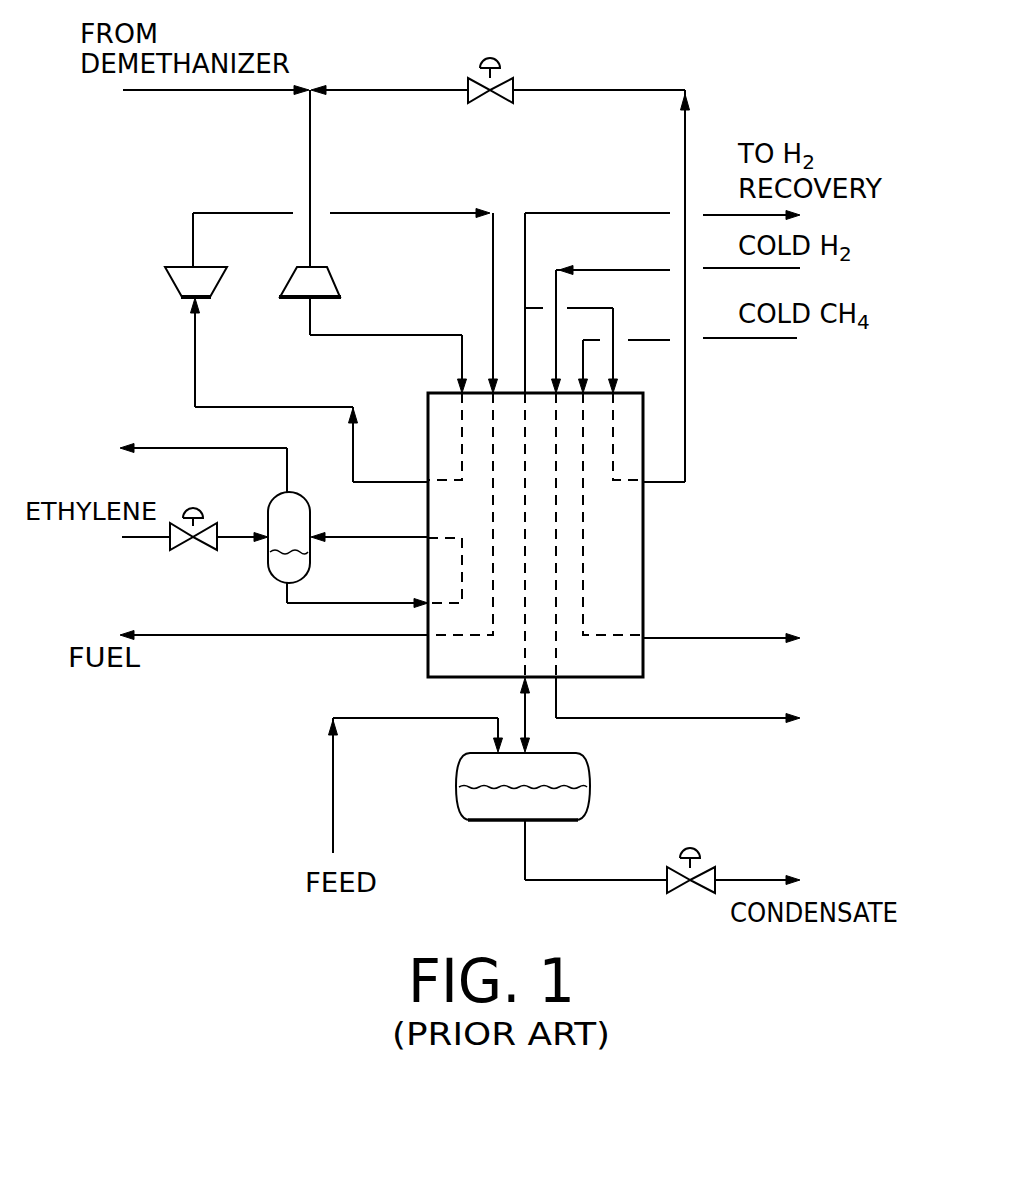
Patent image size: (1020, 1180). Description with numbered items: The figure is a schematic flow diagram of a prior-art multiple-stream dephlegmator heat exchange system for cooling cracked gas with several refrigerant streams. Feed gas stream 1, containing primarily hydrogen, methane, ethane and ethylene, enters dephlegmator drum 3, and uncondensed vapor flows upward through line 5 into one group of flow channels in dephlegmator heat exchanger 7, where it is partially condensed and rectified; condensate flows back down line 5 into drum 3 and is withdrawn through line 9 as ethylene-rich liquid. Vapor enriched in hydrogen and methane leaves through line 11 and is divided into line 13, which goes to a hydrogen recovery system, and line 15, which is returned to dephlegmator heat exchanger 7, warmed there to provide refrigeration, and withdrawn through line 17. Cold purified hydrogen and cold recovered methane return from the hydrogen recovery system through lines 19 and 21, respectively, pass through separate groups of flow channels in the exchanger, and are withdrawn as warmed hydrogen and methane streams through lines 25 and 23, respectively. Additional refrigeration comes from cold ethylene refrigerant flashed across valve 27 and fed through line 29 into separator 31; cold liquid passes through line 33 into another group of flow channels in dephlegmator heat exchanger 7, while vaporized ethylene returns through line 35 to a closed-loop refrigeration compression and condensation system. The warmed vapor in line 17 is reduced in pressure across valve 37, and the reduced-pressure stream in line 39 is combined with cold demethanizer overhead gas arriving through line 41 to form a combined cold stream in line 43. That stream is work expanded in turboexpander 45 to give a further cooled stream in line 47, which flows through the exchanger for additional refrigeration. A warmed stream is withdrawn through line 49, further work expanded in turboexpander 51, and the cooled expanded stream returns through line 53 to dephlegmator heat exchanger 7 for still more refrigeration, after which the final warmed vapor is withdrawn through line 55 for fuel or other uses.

The feed gas stream 1 is at (333, 767).
The dephlegmator drum 3 is at (589, 780).
The line 5 is at (520, 710).
The dephlegmator heat exchanger 7 is at (644, 582).
The line 9 is at (612, 878).
The line 11 is at (523, 330).
The line 13 is at (612, 212).
The line 15 is at (613, 322).
The line 17 is at (686, 418).
The line 19 is at (711, 268).
The line 21 is at (711, 337).
The line 23 is at (697, 637).
The line 25 is at (690, 717).
The valve 27 is at (178, 550).
The line 29 is at (235, 535).
The separator 31 is at (303, 492).
The line 33 is at (338, 601).
The line 35 is at (178, 446).
The valve 37 is at (508, 80).
The line 39 is at (372, 89).
The line 41 is at (215, 93).
The line 43 is at (310, 163).
The turboexpander 45 is at (338, 282).
The line 47 is at (398, 335).
The line 49 is at (251, 407).
The turboexpander 51 is at (165, 279).
The line 53 is at (400, 213).
The line 55 is at (240, 637).